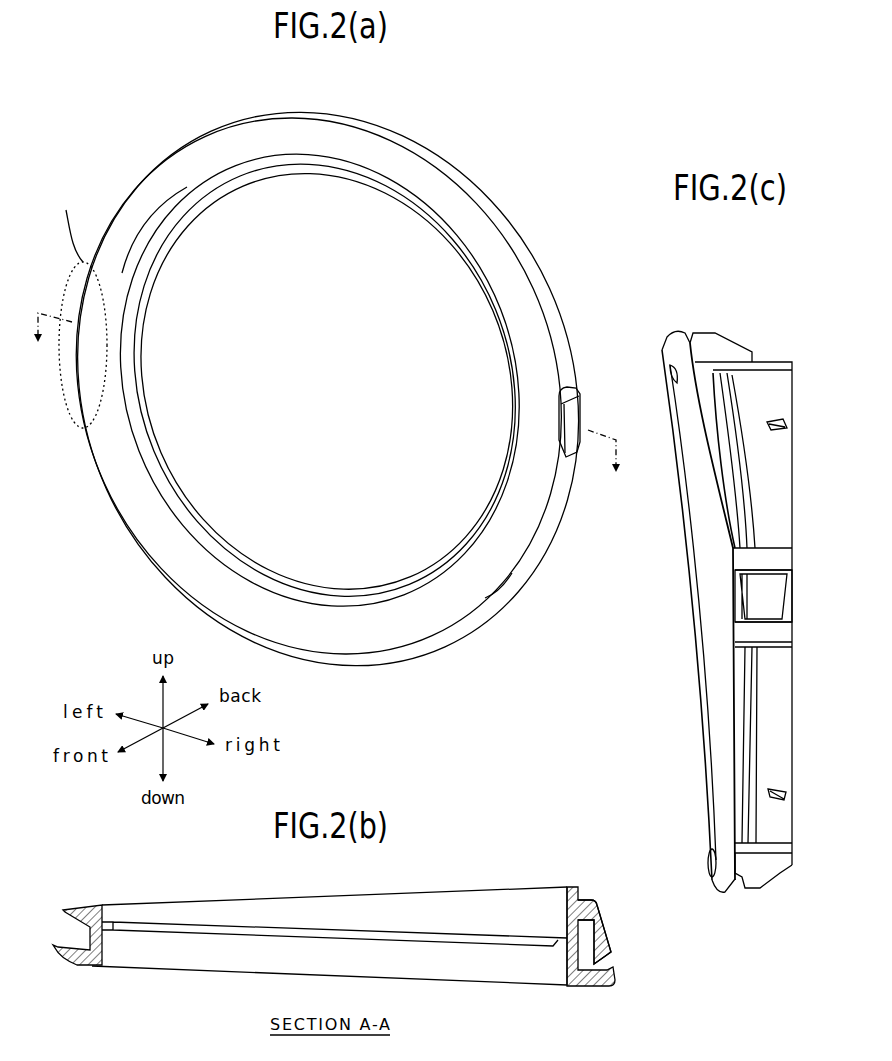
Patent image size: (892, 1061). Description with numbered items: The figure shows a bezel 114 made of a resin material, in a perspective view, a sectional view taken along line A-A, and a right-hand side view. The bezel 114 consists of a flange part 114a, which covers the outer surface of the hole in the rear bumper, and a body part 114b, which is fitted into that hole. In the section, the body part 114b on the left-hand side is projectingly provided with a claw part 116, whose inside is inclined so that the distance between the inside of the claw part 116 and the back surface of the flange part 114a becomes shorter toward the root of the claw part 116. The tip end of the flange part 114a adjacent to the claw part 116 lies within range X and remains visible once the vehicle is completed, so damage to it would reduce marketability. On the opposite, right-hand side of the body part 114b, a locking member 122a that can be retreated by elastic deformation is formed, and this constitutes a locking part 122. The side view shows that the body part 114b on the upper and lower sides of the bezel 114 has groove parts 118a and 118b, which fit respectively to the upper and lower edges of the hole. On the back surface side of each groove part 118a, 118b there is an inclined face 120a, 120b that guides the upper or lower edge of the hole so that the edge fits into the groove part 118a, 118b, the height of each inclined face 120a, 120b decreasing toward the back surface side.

In FIG. 2A, the bezel 114 is at (168, 113).
In FIG. 2B, the bezel 114 is at (480, 863).
In FIG. 2C, the bezel 114 is at (751, 301).
In FIG. 2A, the flange part 114a is at (508, 557).
In FIG. 2B, the flange part 114a is at (75, 967).
In FIG. 2A, the body part 114b is at (496, 206).
In FIG. 2B, the body part 114b is at (546, 885).
In FIG. 2B, the claw part 116 is at (80, 906).
In FIG. 2C, the groove part 118a is at (664, 339).
In FIG. 2C, the groove part 118b is at (732, 886).
In FIG. 2C, the inclined face 120a is at (740, 350).
In FIG. 2C, the inclined face 120b is at (777, 882).
In FIG. 2A, the locking part 122 is at (570, 412).
In FIG. 2B, the locking part 122 is at (619, 956).
In FIG. 2C, the locking part 122 is at (732, 593).
In FIG. 2B, the locking member 122a is at (603, 913).
In FIG. 2C, the locking member 122a is at (765, 607).